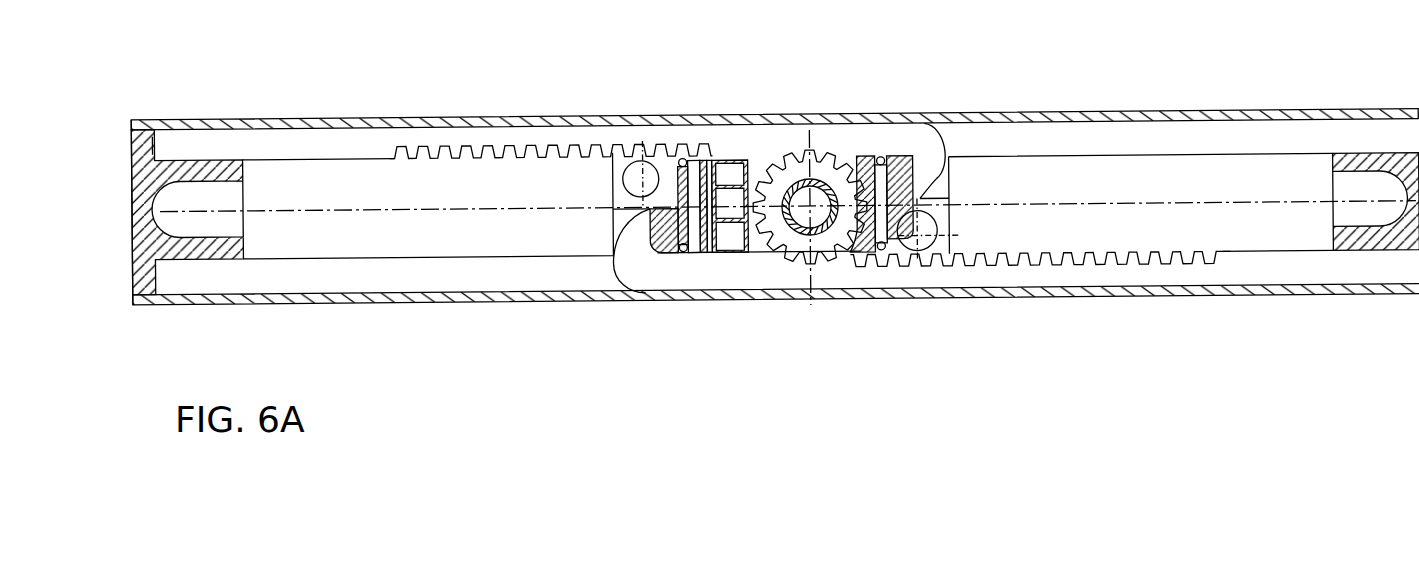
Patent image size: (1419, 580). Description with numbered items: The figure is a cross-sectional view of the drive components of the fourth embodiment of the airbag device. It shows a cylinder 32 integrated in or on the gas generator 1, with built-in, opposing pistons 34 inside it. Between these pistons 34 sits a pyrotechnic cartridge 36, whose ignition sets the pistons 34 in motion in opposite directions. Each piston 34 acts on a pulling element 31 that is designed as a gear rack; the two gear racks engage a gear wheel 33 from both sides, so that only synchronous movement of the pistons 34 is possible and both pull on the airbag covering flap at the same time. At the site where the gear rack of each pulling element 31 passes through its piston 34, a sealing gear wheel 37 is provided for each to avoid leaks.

The gas generator 1 is at (437, 123).
The pulling element 31 is at (975, 277).
The cylinder 32 is at (572, 295).
The gear wheel 33 is at (818, 168).
The piston 34 is at (663, 218).
The pyrotechnic cartridge 36 is at (730, 237).
The sealing gear wheel 37 is at (632, 173).